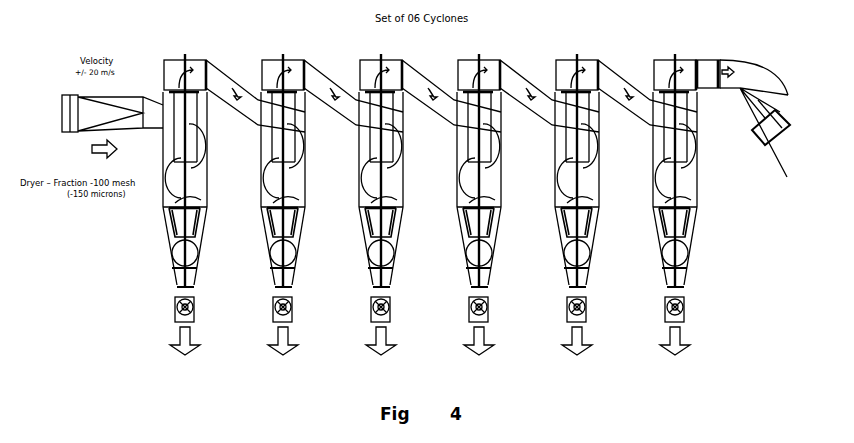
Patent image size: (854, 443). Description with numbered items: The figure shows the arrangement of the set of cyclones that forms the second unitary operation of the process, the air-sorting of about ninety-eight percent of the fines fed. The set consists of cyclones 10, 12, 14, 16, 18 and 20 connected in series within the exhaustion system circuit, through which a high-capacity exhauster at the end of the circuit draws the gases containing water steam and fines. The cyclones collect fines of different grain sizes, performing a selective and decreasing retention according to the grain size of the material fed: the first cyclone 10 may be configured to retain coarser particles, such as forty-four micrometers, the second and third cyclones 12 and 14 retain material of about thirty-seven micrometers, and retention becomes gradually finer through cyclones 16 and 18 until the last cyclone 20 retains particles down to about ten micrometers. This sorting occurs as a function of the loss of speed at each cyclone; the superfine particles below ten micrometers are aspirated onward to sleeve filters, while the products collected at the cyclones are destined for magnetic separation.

The cyclone 10 is at (226, 218).
The cyclone 12 is at (324, 218).
The cyclone 14 is at (422, 218).
The cyclone 16 is at (520, 218).
The cyclone 18 is at (618, 218).
The cyclone 20 is at (713, 208).